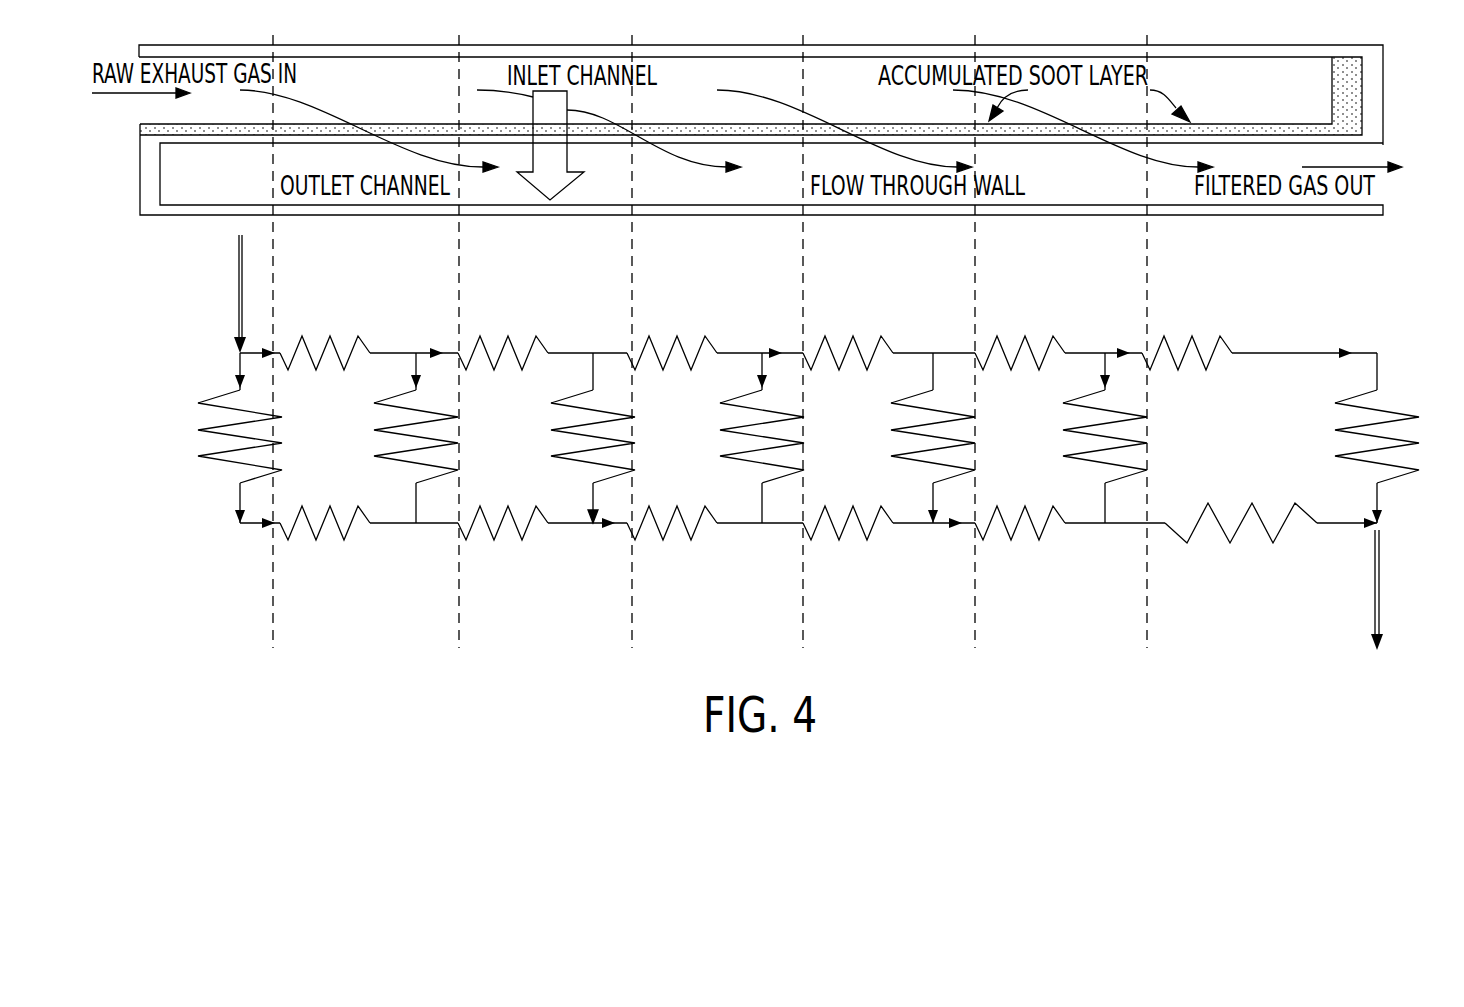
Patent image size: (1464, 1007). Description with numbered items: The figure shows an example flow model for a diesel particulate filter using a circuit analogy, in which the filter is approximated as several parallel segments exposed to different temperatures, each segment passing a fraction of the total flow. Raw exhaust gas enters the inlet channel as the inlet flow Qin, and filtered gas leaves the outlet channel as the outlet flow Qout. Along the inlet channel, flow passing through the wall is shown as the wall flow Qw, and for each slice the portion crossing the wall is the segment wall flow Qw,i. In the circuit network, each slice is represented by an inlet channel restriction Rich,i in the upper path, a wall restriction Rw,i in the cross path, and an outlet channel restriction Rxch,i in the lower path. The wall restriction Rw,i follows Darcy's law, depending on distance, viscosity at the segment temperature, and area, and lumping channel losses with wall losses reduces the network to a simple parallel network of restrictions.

The inlet flow rate Qin is at (222, 294).
The outlet flow rate Qout is at (1401, 593).
The wall flow Qw is at (550, 145).
The wall flow of segment i Qw,i is at (560, 500).
The inlet channel resistance of segment i Rich,i is at (756, 334).
The wall restriction Rw,i is at (808, 436).
The outlet channel resistance of segment i Rxch,i is at (798, 538).